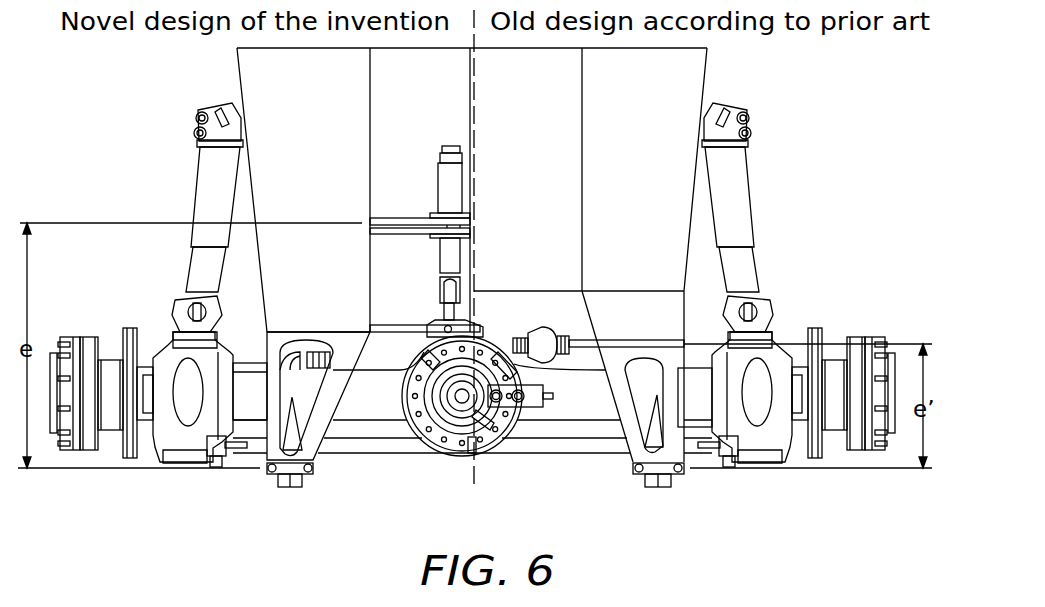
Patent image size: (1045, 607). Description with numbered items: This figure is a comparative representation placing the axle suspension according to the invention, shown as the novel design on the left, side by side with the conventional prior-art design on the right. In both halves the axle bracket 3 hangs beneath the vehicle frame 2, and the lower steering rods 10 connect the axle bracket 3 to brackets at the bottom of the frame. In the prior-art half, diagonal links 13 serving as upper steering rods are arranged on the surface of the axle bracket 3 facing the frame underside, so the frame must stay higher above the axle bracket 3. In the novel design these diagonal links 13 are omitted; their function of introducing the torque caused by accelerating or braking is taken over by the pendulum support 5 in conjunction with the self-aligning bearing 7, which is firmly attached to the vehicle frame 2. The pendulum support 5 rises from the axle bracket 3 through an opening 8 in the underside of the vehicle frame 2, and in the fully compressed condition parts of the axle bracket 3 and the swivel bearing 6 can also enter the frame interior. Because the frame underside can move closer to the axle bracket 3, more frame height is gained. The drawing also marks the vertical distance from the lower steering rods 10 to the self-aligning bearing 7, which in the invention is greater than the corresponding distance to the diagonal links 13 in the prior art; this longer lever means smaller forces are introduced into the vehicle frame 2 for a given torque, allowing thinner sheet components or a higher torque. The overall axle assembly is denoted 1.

The axle assembly 1 is at (332, 518).
The vehicle frame 2 is at (237, 72).
The axle bracket 3 is at (385, 410).
The pendulum support 5 is at (457, 243).
The swivel bearing 6 is at (440, 328).
The self-aligning bearing 7 is at (437, 210).
The opening 8 is at (383, 328).
The lower steering rods 10 is at (268, 477).
The diagonal links 13 is at (577, 338).